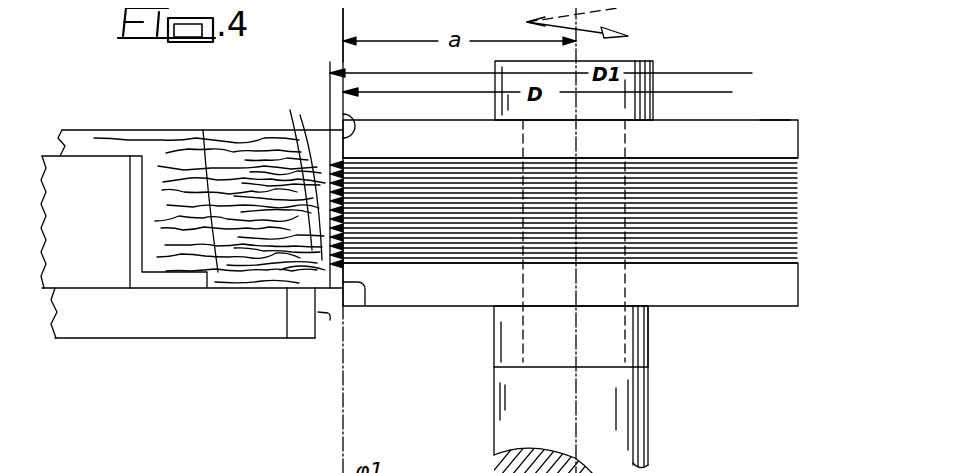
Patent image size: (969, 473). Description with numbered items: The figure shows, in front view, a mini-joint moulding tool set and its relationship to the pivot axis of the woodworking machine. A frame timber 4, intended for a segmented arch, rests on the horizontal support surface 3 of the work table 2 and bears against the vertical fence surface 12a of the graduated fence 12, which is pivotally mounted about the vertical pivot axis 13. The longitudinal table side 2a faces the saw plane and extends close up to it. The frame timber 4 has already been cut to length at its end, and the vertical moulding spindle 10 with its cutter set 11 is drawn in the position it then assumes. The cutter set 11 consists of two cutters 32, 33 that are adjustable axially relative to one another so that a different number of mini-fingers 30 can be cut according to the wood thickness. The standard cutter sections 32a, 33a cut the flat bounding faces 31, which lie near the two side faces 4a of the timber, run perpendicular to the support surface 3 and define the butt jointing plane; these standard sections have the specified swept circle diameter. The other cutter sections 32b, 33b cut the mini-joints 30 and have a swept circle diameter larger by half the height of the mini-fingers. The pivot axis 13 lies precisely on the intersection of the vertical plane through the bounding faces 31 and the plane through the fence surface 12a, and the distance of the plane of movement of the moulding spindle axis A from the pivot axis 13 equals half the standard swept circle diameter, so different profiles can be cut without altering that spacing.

The work table 2 is at (165, 325).
The longitudinal table side 2a is at (330, 320).
The horizontal support surface 3 is at (278, 280).
The frame timber 4 is at (133, 130).
The side faces of the frame timber 4a is at (237, 130).
The moulding spindle 10 is at (623, 450).
The cutter set 11 is at (765, 119).
The graduated fence 12 is at (92, 185).
The vertical fence surface 12a is at (190, 181).
The vertical pivot axis 13 is at (347, 23).
The mini-joints 30 is at (320, 130).
The flat bounding faces 31 is at (343, 118).
The cutter 32 is at (800, 158).
The standard cutter section 32a is at (378, 138).
The cutter section 32b is at (786, 190).
The cutter 33 is at (800, 263).
The standard cutter section 33a is at (430, 293).
The cutter section 33b is at (793, 238).
The moulding spindle axis A is at (576, 340).